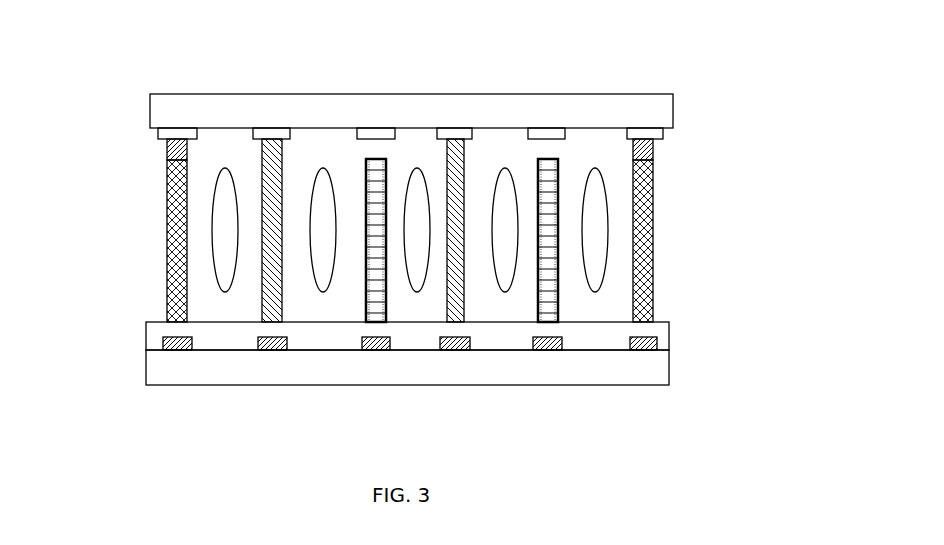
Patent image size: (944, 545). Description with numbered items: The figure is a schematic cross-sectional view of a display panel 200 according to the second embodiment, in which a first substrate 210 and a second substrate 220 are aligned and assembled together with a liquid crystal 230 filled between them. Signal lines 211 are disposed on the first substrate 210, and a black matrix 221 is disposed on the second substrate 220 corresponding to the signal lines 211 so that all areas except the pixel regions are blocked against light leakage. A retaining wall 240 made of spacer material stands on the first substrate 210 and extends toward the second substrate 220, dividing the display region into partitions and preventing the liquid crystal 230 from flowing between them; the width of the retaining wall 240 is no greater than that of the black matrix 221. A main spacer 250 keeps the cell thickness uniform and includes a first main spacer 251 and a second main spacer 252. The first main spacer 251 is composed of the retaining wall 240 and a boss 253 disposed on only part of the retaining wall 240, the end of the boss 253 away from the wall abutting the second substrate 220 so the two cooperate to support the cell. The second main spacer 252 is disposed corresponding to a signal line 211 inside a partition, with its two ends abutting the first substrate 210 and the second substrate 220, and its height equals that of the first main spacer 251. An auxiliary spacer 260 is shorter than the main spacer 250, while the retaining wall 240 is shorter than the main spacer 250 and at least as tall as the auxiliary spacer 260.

The display panel 200 is at (156, 50).
The first substrate 210 is at (643, 370).
The signal lines 211 is at (655, 340).
The second substrate 220 is at (650, 110).
The black matrix 221 is at (648, 135).
The liquid crystal 230 is at (595, 230).
The retaining wall 240 is at (176, 196).
The main spacer 250 is at (394, 230).
The first main spacer 251 is at (415, 230).
The second main spacer 252 is at (273, 264).
The boss 253 is at (170, 150).
The auxiliary spacer 260 is at (545, 300).